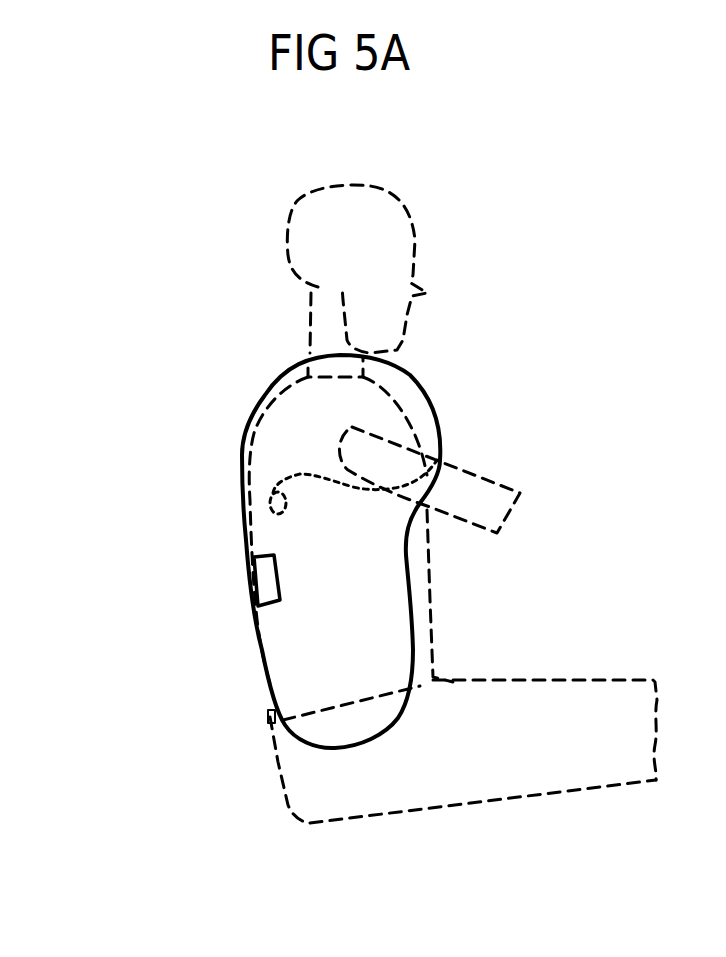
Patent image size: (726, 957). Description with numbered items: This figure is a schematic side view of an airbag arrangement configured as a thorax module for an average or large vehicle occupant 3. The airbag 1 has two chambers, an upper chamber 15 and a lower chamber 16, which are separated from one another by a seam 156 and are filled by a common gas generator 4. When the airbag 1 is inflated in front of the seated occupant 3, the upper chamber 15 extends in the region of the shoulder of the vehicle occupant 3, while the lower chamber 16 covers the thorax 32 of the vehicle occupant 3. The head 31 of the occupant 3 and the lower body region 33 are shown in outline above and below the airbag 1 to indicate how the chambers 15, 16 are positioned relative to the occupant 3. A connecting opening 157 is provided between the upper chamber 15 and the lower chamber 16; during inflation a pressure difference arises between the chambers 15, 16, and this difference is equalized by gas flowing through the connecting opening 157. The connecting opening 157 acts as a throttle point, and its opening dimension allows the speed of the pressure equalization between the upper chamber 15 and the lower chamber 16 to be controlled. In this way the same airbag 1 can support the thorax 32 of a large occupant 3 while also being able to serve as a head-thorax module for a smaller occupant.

The airbag 1 is at (252, 692).
The vehicle occupant 3 is at (538, 703).
The gas generator 4 is at (267, 583).
The upper chamber 15 is at (422, 405).
The lower chamber 16 is at (388, 638).
The head of occupant 31 is at (383, 228).
The thorax 32 is at (263, 452).
The seat cushion bottom 33 is at (373, 792).
The seam 156 is at (320, 477).
The connecting opening 157 is at (260, 510).